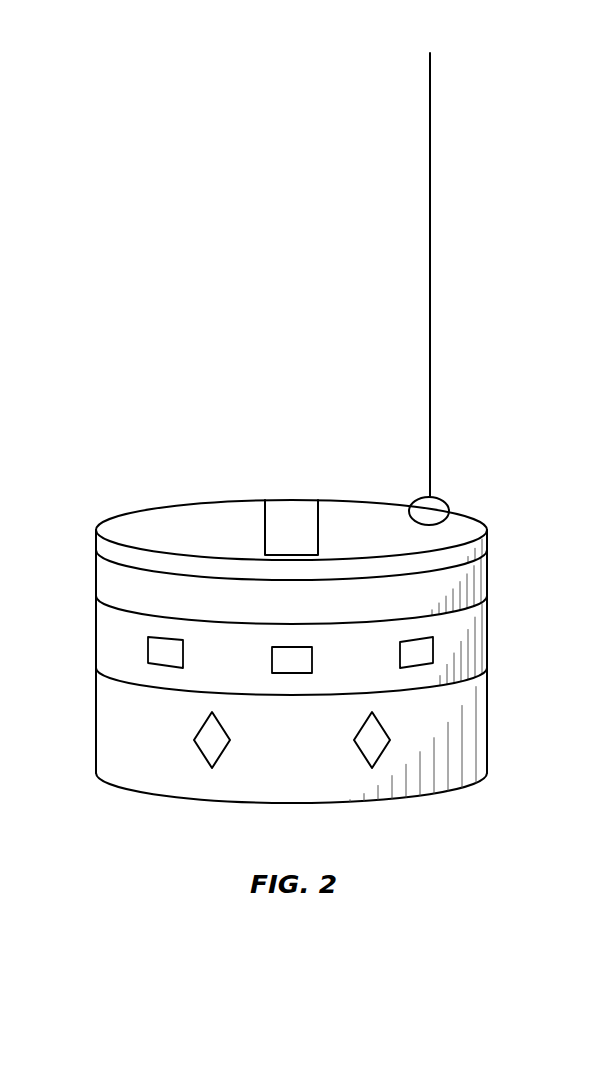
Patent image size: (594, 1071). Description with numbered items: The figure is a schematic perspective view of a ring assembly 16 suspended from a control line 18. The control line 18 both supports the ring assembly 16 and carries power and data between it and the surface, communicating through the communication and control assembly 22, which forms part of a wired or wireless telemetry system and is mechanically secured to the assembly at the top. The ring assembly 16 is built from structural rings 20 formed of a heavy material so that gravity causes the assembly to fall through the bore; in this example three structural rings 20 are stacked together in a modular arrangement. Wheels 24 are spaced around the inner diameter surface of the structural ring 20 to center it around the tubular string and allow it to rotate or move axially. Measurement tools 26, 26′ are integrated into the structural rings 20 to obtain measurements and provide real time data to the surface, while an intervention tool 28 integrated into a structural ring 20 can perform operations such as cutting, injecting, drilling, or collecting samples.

The ring assembly 16 is at (126, 447).
The control line 18 is at (431, 284).
The structural ring 20 is at (113, 655).
The communication and control assembly 22 is at (450, 506).
The wheels 24 is at (290, 515).
The measurement tool 26 is at (98, 552).
The measurement tool 26′ is at (418, 651).
The intervention tool 28 is at (372, 739).